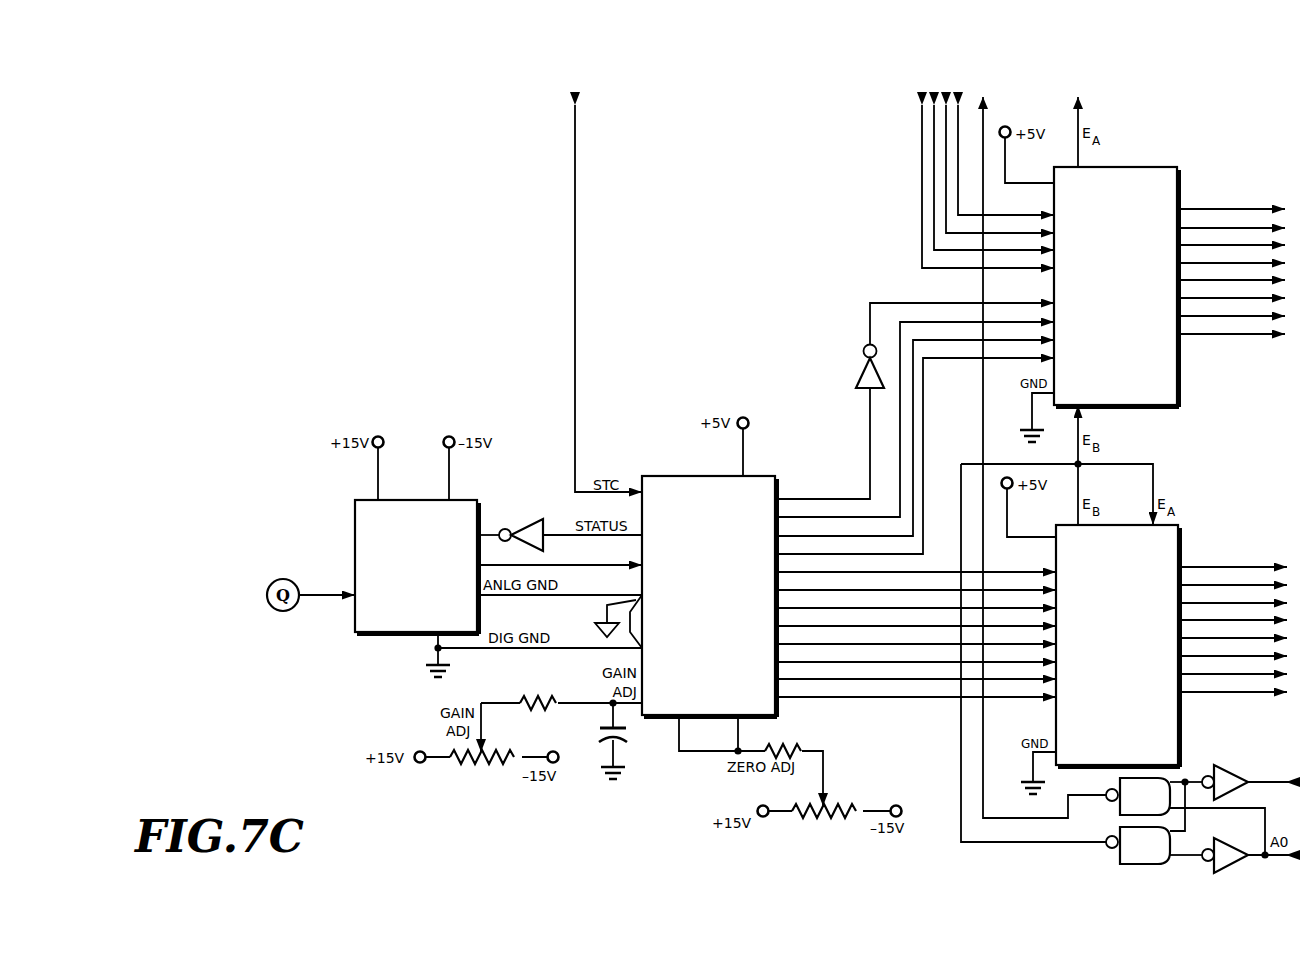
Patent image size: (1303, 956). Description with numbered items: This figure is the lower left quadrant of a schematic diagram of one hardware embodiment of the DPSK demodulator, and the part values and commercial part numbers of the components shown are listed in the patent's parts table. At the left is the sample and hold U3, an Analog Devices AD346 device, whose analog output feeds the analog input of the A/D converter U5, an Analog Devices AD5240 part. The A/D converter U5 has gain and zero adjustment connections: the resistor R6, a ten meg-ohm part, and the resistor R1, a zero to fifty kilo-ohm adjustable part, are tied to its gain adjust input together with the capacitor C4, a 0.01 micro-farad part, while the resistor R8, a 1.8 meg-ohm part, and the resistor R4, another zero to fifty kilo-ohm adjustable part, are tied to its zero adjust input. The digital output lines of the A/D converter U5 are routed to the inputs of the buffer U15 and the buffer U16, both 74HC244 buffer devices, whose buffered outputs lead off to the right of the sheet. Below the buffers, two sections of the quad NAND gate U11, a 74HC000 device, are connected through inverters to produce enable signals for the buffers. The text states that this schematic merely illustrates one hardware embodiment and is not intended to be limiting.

The sample and hold U3 is at (417, 567).
The A/D converter U5 is at (709, 596).
The buffer U15 is at (1116, 287).
The buffer U16 is at (1118, 646).
The quad NAND gate U11 is at (1138, 821).
The resistor R1 is at (450, 765).
The resistor R6 is at (522, 698).
The capacitor C4 is at (618, 738).
The resistor R8 is at (774, 747).
The resistor R4 is at (789, 814).